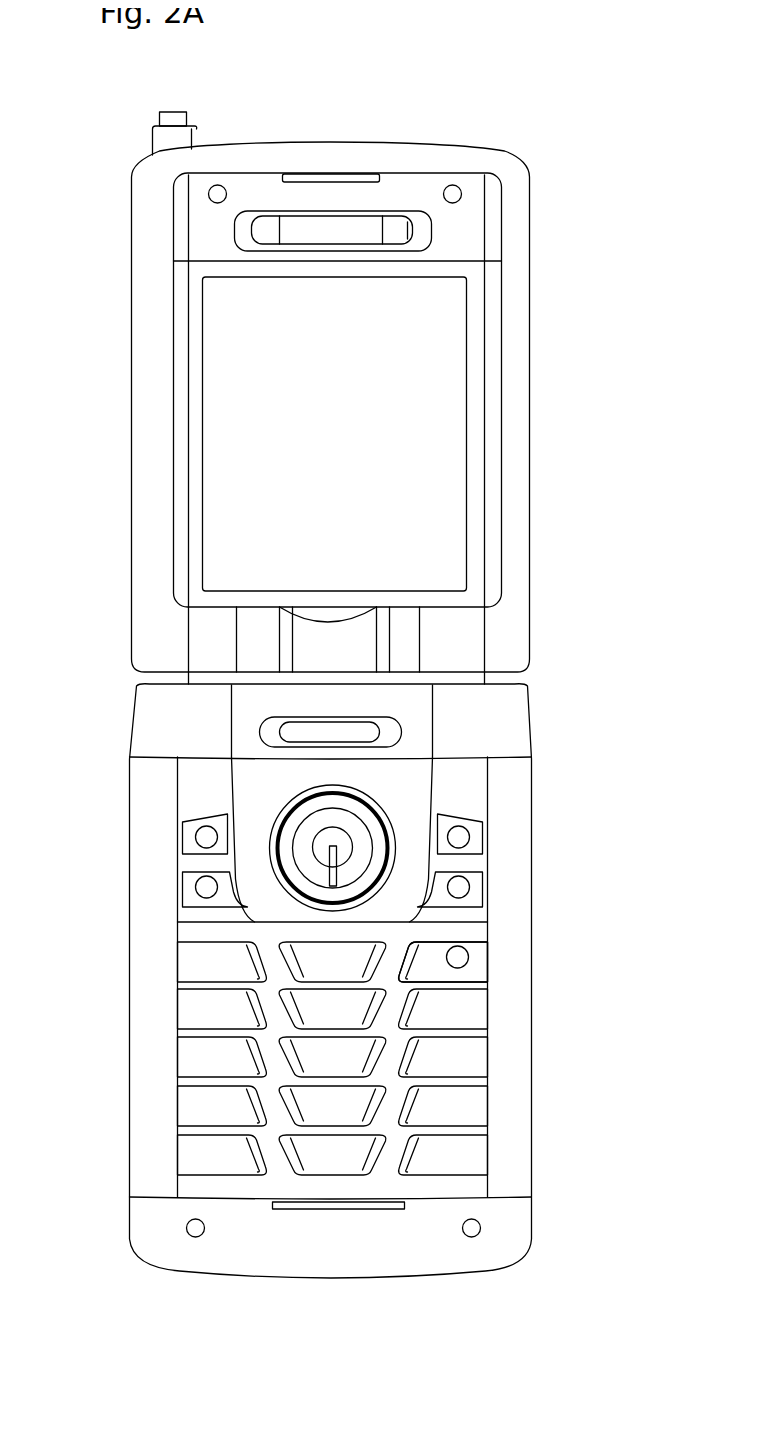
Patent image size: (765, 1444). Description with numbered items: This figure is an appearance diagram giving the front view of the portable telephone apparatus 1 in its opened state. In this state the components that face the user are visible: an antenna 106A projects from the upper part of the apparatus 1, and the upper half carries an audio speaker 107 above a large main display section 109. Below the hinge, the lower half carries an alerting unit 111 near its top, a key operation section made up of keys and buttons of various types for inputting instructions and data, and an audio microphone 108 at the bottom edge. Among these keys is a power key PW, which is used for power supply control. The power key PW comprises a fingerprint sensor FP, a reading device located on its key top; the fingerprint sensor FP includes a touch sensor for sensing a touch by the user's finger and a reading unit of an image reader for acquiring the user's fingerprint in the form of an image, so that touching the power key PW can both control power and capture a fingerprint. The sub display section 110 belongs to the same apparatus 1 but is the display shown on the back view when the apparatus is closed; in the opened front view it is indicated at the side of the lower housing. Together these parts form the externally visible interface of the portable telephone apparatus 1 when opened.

The portable telephone apparatus 1 is at (503, 114).
The antenna 106A is at (170, 113).
The audio speaker 107 is at (343, 175).
The audio microphone 108 is at (320, 1212).
The main display section 109 is at (232, 435).
The sub display section 110 is at (552, 760).
The alerting unit 111 is at (300, 733).
The fingerprint sensor FP is at (465, 951).
The power key PW is at (488, 955).